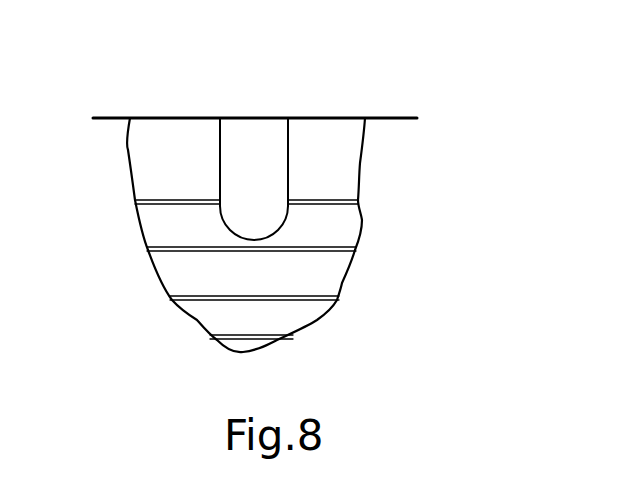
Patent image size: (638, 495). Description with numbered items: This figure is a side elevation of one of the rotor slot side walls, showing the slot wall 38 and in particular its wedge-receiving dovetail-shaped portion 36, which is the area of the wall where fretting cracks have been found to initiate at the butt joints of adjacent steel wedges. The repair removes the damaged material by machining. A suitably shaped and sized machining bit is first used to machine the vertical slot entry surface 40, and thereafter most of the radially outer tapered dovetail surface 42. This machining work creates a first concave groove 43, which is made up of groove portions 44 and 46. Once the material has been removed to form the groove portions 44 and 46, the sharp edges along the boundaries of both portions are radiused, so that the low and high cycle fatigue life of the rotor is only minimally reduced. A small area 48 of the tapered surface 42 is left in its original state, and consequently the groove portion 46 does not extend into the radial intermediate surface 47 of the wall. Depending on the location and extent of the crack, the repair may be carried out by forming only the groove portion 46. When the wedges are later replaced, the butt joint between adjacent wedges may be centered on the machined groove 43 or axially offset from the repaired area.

The dovetail-shaped portion 36 is at (163, 153).
The slot wall 38 is at (303, 308).
The vertical slot entry surface 40 is at (198, 135).
The radially outer tapered dovetail surface 42 is at (343, 217).
The first concave groove 43 is at (211, 198).
The groove portion 44 is at (252, 140).
The groove portion 46 is at (268, 217).
The radial intermediate surface 47 is at (327, 272).
The small area 48 is at (238, 245).